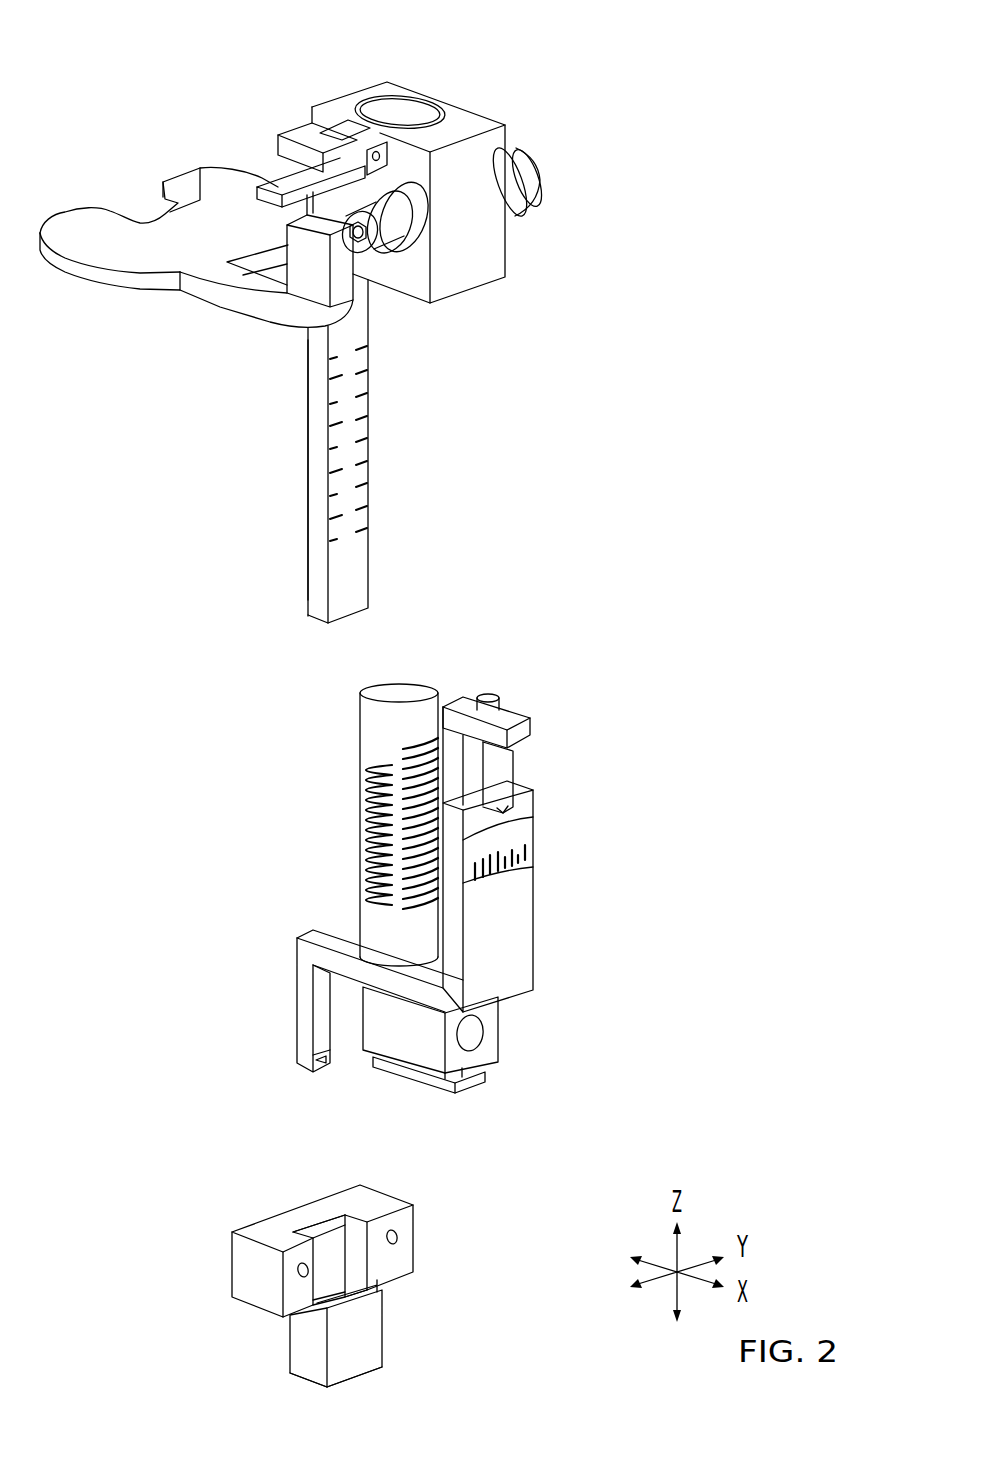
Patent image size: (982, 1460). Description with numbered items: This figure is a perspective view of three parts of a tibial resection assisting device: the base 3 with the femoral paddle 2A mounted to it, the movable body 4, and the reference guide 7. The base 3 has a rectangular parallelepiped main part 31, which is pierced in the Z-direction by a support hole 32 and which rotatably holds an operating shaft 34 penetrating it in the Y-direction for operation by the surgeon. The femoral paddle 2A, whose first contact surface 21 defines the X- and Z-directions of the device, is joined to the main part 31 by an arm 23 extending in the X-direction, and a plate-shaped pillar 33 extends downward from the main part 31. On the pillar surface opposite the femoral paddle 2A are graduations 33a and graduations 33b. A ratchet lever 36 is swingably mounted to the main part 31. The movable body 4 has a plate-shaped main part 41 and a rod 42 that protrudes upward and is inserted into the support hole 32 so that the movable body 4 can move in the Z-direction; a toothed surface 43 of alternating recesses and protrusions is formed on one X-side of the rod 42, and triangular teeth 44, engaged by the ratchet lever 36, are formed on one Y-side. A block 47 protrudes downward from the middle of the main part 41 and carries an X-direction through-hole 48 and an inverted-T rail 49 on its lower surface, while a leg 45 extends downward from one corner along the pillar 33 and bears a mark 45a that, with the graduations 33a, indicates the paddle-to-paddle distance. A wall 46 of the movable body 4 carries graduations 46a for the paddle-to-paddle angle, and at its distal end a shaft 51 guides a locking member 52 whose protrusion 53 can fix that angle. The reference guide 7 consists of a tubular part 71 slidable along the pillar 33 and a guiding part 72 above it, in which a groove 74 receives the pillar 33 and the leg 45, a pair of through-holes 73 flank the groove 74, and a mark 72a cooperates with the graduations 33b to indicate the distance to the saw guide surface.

The femoral paddle 2A is at (87, 278).
The first contact surface 21 is at (93, 222).
The arm 23 is at (222, 298).
The base 3 is at (479, 293).
The main part 31 is at (478, 115).
The support hole 32 is at (403, 106).
The pillar 33 is at (355, 578).
The graduations 33a is at (333, 475).
The graduations 33b is at (360, 464).
The operating shaft 34 is at (538, 170).
The ratchet lever 36 is at (276, 184).
The movable body 4 is at (538, 917).
The main part 41 is at (350, 942).
The rod 42 is at (400, 690).
The toothed surface 43 is at (440, 775).
The teeth 44 is at (360, 797).
The leg 45 is at (302, 995).
The mark 45a is at (318, 1058).
The wall 46 is at (505, 962).
The graduations 46a is at (527, 854).
The block 47 is at (403, 1035).
The through-hole 48 is at (478, 1032).
The rail 49 is at (477, 1088).
The shaft 51 is at (490, 694).
The locking member 52 is at (514, 717).
The protrusion 53 is at (508, 813).
The reference guide 7 is at (394, 1325).
The tubular part 71 is at (302, 1340).
The guiding part 72 is at (272, 1228).
The mark 72a is at (378, 1281).
The through-holes 73 is at (297, 1278).
The groove 74 is at (332, 1247).